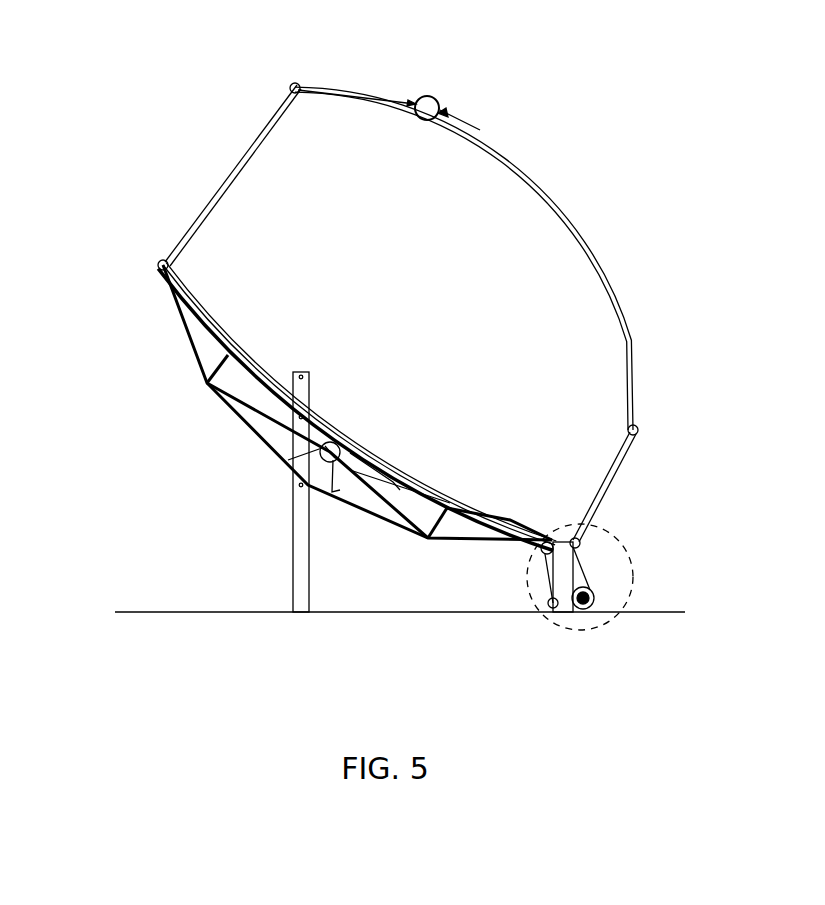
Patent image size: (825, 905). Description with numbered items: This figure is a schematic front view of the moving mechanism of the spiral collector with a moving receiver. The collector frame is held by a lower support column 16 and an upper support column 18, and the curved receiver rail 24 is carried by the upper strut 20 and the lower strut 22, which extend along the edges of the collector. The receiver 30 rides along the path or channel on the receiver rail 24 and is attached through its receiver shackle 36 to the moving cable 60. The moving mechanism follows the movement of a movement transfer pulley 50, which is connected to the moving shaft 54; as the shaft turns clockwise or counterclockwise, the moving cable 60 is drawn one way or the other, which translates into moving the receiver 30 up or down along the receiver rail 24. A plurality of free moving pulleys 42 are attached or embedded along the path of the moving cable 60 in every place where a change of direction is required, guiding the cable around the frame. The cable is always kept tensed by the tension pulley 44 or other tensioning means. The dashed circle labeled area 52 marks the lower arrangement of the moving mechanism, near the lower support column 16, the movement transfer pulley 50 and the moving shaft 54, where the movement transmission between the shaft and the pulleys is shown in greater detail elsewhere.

The lower support column 16 is at (562, 570).
The upper support column 18 is at (293, 578).
The upper strut 20 is at (240, 163).
The lower strut 22 is at (634, 442).
The receiver rail 24 is at (343, 95).
The receiver 30 is at (430, 108).
The receiver shackle 36 is at (446, 114).
The moving pulleys 42 is at (163, 260).
The tension pulley 44 is at (323, 444).
The movement transfer pulley 50 is at (592, 588).
The exploded area for moving mechanism lower arrangement 52 is at (607, 622).
The moving shaft 54 is at (594, 598).
The moving cable 60 is at (470, 134).